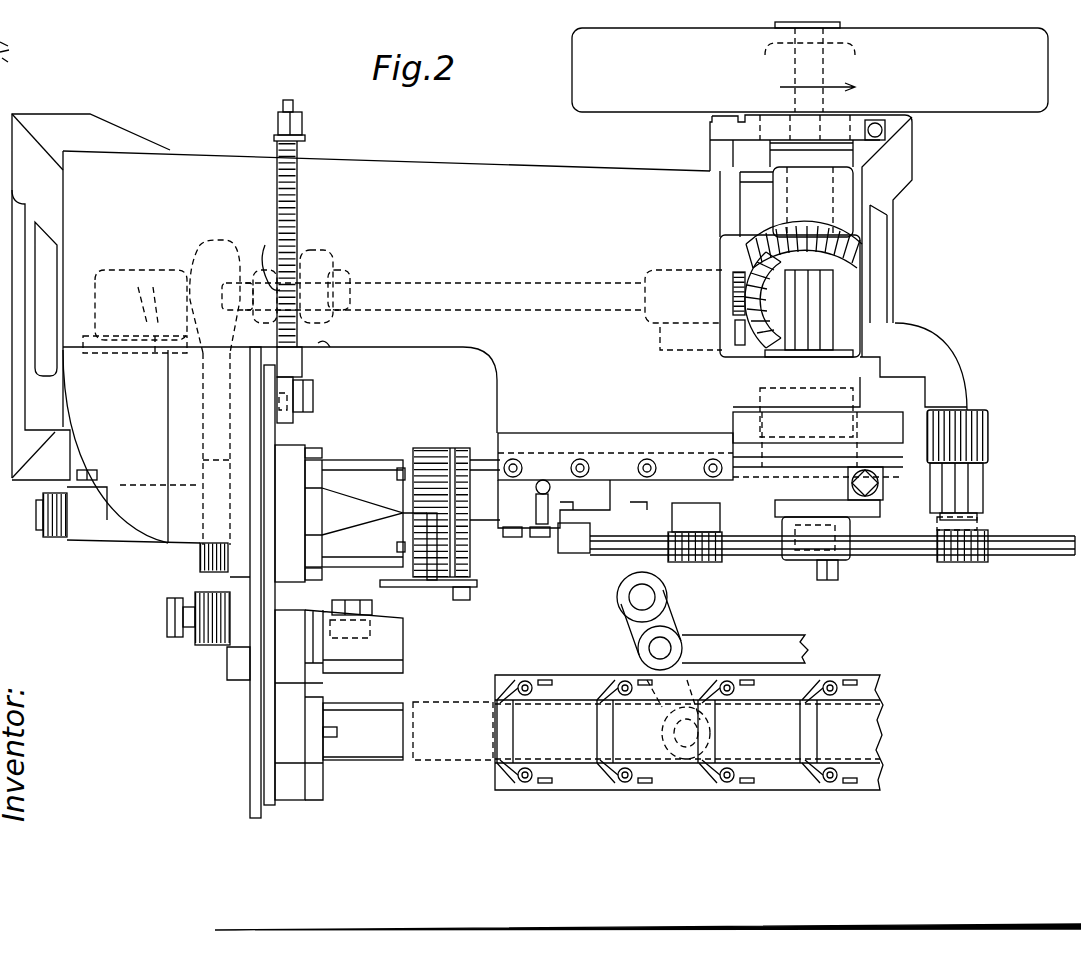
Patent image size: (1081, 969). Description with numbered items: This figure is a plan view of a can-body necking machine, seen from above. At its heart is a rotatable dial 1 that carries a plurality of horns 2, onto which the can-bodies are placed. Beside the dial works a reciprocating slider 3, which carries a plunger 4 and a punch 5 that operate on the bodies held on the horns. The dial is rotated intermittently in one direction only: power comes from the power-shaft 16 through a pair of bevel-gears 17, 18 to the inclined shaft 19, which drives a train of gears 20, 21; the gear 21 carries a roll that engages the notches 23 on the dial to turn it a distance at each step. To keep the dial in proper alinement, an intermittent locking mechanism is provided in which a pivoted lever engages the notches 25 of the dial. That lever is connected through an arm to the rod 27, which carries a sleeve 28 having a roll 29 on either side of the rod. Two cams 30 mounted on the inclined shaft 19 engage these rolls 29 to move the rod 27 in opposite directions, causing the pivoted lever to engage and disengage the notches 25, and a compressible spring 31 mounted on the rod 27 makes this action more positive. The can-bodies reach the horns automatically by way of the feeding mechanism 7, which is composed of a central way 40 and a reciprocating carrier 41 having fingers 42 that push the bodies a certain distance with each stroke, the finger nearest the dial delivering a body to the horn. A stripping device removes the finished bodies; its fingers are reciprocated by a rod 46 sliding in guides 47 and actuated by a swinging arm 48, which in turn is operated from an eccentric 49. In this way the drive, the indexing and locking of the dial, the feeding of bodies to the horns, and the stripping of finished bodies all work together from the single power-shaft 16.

The rotatable dial 1 is at (250, 700).
The horns 2 is at (360, 527).
The reciprocating slider 3 is at (598, 483).
The plunger 4 is at (432, 582).
The punch 5 is at (424, 458).
The feeding mechanism 7 is at (689, 750).
The power-shaft 16 is at (828, 283).
The bevel-gear 17 is at (793, 250).
The bevel-gear 18 is at (753, 262).
The inclined shaft 19 is at (545, 312).
The gear 20 is at (193, 250).
The gear 21 is at (202, 567).
The notches 23 is at (252, 652).
The notches 25 is at (253, 587).
The rod 27 is at (305, 372).
The sleeve 28 is at (290, 260).
The rolls 29 is at (277, 242).
The cams 30 is at (262, 285).
The compressible spring 31 is at (293, 168).
The central way 40 is at (503, 735).
The reciprocating carrier 41 is at (570, 682).
The fingers 42 is at (513, 763).
The rod 46 is at (746, 556).
The guides 47 is at (703, 562).
The swinging arm 48 is at (980, 508).
The eccentric 49 is at (790, 533).